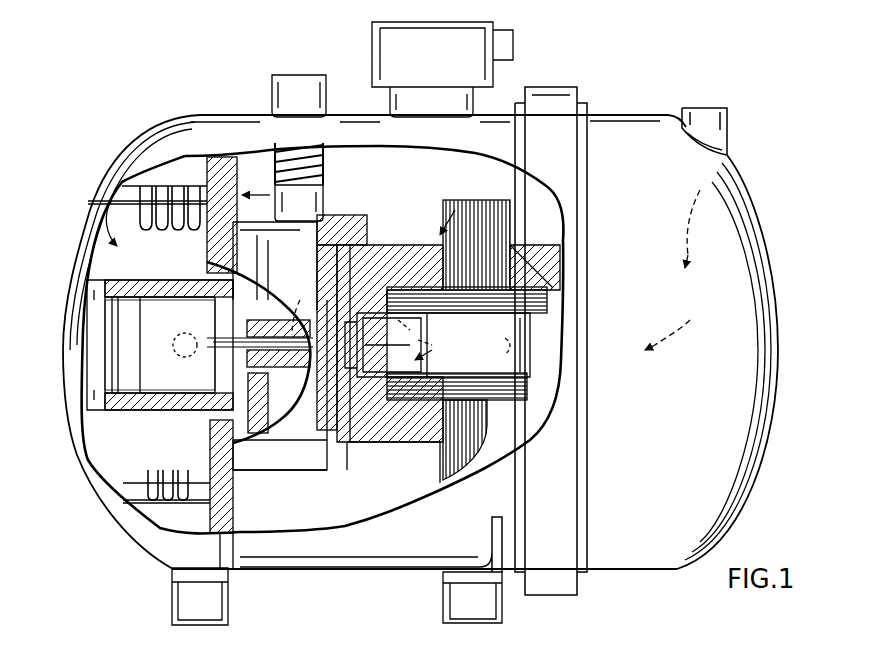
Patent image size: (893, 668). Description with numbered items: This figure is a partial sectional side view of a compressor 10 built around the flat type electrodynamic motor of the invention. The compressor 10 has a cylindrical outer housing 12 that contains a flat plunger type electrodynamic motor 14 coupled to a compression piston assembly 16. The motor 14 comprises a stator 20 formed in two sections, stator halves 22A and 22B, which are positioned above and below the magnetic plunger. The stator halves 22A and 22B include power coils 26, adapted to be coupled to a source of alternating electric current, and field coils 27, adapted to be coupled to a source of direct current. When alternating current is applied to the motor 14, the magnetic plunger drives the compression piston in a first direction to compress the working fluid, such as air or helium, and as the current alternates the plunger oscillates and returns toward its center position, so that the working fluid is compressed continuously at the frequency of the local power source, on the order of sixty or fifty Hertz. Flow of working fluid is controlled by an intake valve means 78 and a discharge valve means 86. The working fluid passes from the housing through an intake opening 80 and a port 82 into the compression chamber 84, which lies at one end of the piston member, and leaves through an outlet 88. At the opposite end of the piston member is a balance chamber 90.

The compressor 10 is at (776, 468).
The outer housing 12 is at (745, 208).
The flat plunger type electrodynamic motor 14 is at (406, 470).
The compression piston assembly 16 is at (158, 397).
The stator 20 is at (376, 272).
The stator half 22A is at (528, 262).
The stator half 22B is at (381, 483).
The power coils 26 is at (545, 303).
The field coils 27 is at (470, 222).
The intake valve means 78 is at (224, 300).
The intake opening 80 is at (703, 102).
The port 82 is at (246, 492).
The compression chamber 84 is at (123, 483).
The discharge valve means 86 is at (268, 312).
The outlet 88 is at (300, 66).
The balance chamber 90 is at (128, 318).